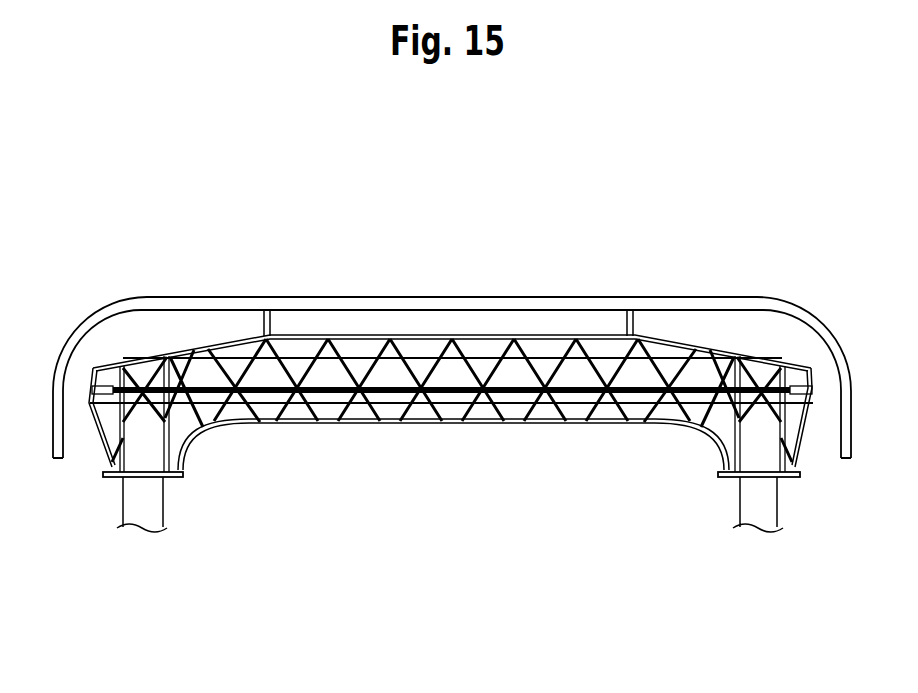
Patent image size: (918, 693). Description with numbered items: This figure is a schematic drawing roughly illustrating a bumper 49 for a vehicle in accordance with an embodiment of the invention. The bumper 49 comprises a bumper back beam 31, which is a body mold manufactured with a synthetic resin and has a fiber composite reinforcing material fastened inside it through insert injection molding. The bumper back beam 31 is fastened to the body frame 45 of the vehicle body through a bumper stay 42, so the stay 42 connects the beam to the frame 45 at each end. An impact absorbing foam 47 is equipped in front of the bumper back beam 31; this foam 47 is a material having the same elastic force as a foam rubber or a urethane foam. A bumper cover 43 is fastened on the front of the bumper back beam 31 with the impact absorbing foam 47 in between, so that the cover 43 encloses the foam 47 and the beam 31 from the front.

The bumper back beam 31 is at (433, 448).
The bumper stay 42 is at (183, 475).
The bumper cover 43 is at (729, 305).
The body frame 45 is at (135, 500).
The impact absorbing foam 47 is at (393, 320).
The bumper 49 is at (578, 232).